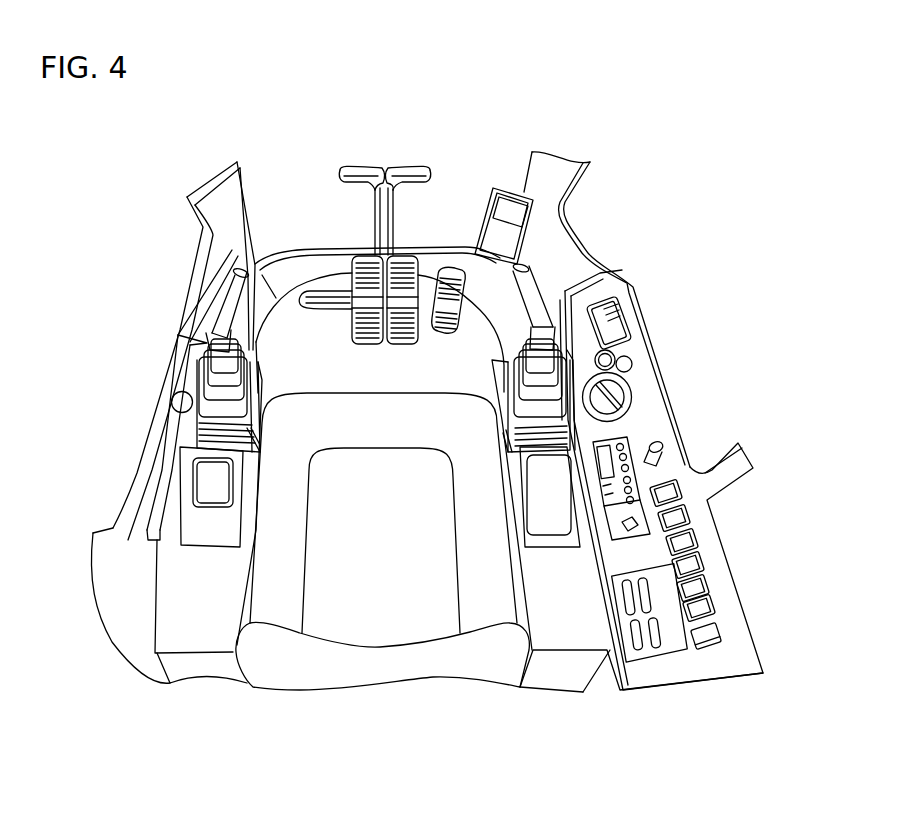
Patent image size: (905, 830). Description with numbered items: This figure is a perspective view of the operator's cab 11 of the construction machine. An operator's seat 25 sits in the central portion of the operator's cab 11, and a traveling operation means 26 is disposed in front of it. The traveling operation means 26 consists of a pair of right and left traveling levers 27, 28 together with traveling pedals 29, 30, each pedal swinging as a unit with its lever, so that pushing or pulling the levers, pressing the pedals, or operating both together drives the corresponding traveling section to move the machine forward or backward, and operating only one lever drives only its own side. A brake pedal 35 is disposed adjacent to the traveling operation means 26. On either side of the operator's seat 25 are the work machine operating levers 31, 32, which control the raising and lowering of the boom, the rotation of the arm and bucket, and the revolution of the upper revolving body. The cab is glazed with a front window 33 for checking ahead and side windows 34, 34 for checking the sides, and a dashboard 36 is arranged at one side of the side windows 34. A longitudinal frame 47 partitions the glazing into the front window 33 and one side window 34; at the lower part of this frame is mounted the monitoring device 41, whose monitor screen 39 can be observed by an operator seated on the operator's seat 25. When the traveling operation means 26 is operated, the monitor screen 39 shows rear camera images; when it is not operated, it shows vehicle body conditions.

The operator's cab 11 is at (610, 245).
The operator's seat 25 is at (322, 612).
The traveling operation means 26 is at (367, 164).
The traveling lever 27 is at (355, 172).
The traveling lever 28 is at (400, 172).
The traveling pedal 29 is at (369, 328).
The traveling pedal 30 is at (400, 328).
The work machine operating lever 31 is at (228, 292).
The work machine operating lever 32 is at (528, 287).
The front window 33 is at (285, 205).
The side window 34 is at (133, 430).
The brake pedal 35 is at (452, 268).
The dashboard 36 is at (652, 423).
The monitor screen 39 is at (517, 212).
The monitoring device 41 is at (505, 180).
The longitudinal frame 47 is at (550, 172).